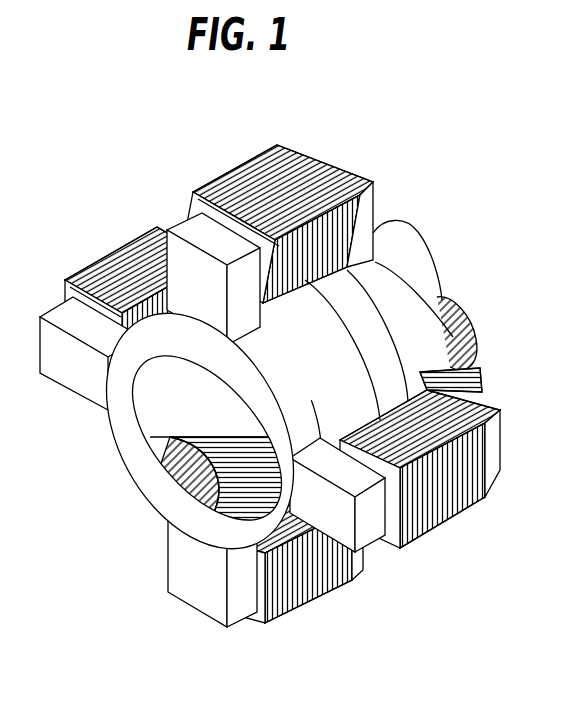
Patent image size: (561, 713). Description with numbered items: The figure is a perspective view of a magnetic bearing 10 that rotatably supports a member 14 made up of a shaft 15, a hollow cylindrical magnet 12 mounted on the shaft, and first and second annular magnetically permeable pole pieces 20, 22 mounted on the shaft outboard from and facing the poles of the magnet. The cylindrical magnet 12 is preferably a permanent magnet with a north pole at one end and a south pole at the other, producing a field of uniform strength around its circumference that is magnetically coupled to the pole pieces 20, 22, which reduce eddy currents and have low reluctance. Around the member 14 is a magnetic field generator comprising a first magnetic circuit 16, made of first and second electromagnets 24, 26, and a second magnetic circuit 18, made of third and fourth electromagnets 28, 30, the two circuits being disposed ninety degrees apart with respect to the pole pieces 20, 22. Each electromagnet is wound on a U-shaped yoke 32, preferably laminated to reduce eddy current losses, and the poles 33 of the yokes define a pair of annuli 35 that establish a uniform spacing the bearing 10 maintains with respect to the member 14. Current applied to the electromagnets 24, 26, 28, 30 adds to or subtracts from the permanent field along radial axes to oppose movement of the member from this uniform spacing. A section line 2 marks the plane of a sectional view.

The section line 2- 2 is at (348, 119).
The magnetic bearing 10 is at (273, 363).
The hollow cylindrical magnet 12 is at (434, 388).
The member 14 is at (288, 361).
The shaft 15 is at (413, 237).
The first magnetic circuit 16 is at (256, 222).
The second magnetic circuit 18 is at (436, 502).
The first magnetically permeable pole piece 20 is at (123, 397).
The second magnetically permeable pole piece 22 is at (430, 268).
The first electromagnet 24 is at (263, 148).
The second electromagnet 26 is at (340, 587).
The third electromagnet 28 is at (487, 488).
The fourth electromagnet 30 is at (86, 275).
The U-shaped yoke 32 is at (180, 225).
The poles 33 is at (158, 231).
The annuli 35 is at (372, 272).